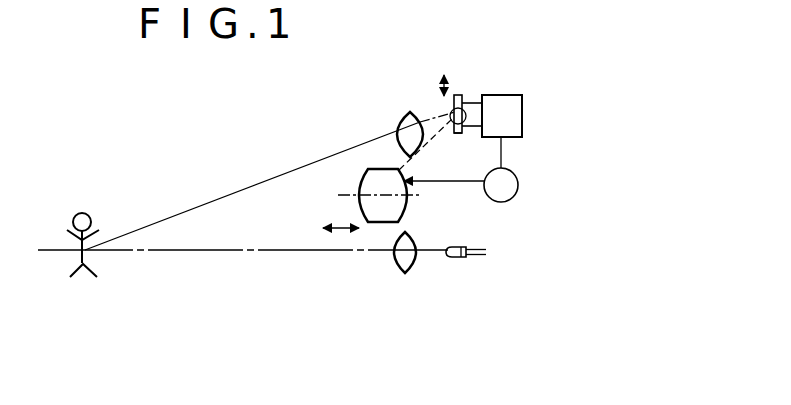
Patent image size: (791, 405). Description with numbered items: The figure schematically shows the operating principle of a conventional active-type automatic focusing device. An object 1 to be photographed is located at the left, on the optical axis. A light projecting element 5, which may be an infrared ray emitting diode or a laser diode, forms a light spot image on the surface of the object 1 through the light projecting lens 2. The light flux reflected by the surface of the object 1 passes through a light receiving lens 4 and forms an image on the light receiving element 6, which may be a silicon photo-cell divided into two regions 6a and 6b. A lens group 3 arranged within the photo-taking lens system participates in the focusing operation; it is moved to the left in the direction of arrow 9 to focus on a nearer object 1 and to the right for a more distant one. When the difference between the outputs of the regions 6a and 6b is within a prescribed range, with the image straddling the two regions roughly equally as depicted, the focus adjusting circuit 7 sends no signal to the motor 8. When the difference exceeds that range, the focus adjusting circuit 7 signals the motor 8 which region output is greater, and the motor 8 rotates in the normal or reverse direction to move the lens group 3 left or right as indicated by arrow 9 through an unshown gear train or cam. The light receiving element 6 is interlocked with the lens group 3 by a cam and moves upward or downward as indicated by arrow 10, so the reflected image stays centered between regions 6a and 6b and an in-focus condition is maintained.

The object to be photographed 1 is at (92, 268).
The light projecting lens 2 is at (411, 265).
The lens group 3 is at (360, 186).
The light receiving lens 4 is at (400, 127).
The light projecting element 5 is at (460, 260).
The light receiving element 6 is at (463, 90).
The region 6a is at (452, 103).
The region 6b is at (460, 134).
The focus adjusting circuit 7 is at (510, 95).
The motor 8 is at (516, 195).
The arrow 9 is at (340, 228).
The arrow 10 is at (440, 92).